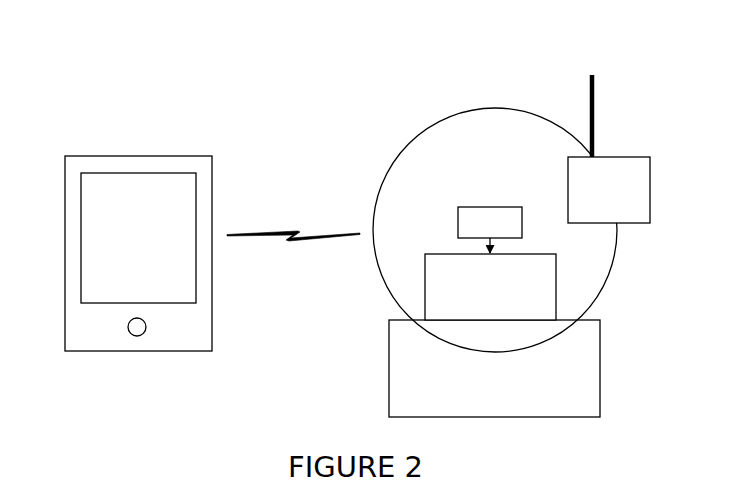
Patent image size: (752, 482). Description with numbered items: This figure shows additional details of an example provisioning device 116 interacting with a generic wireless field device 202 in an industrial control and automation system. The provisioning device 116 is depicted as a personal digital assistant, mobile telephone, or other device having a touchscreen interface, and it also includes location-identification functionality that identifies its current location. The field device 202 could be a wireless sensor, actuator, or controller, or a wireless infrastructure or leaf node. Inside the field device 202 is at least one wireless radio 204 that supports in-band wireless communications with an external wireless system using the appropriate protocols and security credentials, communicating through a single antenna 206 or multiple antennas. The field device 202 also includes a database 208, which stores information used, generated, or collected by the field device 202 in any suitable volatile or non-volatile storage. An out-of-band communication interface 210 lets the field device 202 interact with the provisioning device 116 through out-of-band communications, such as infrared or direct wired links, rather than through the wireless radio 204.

The provisioning device 116 is at (157, 150).
The wireless field device 202 is at (427, 121).
The wireless radio 204 is at (621, 153).
The antenna 206 is at (598, 70).
The database 208 is at (538, 251).
The out-of-band (OOB) communication interface 210 is at (496, 201).